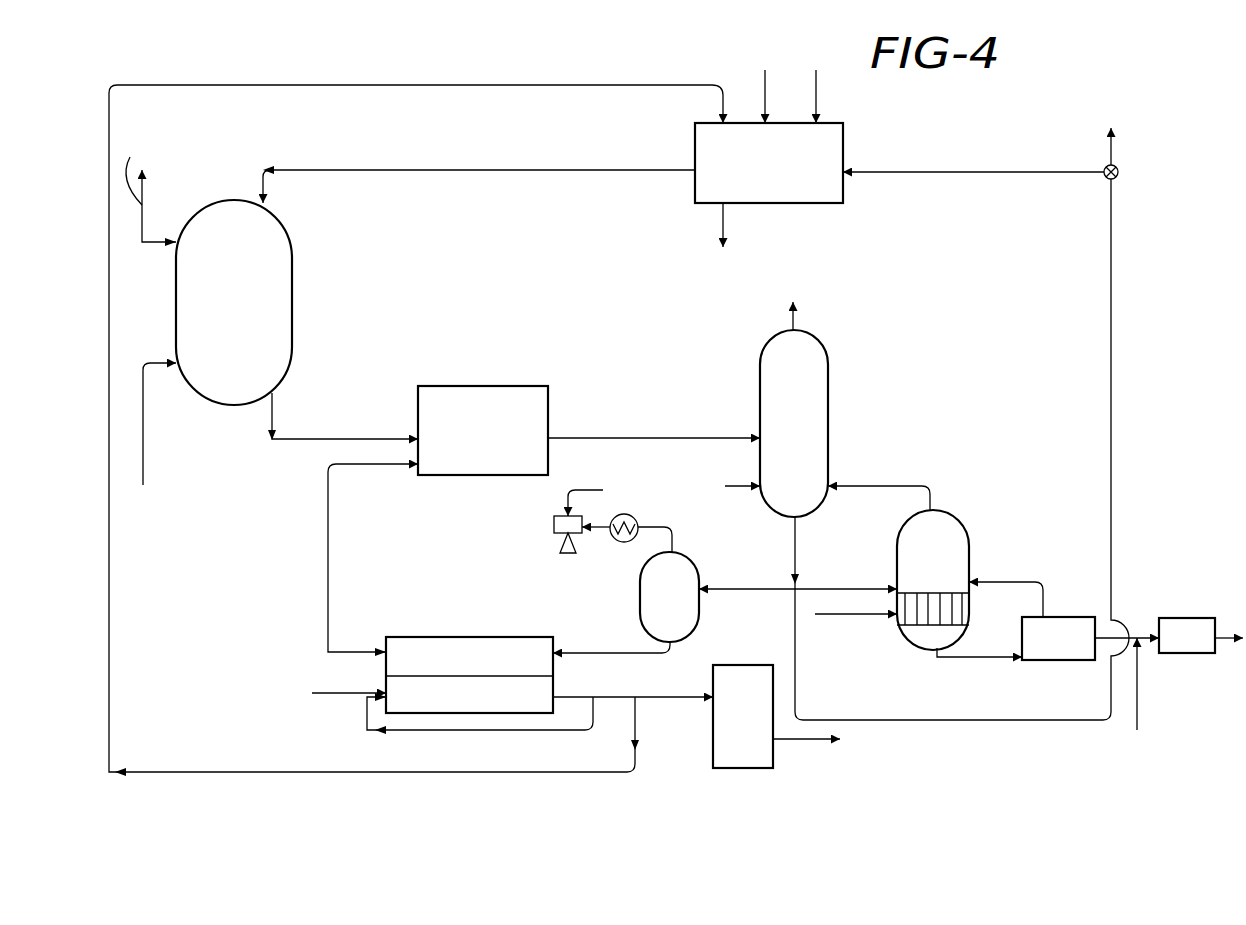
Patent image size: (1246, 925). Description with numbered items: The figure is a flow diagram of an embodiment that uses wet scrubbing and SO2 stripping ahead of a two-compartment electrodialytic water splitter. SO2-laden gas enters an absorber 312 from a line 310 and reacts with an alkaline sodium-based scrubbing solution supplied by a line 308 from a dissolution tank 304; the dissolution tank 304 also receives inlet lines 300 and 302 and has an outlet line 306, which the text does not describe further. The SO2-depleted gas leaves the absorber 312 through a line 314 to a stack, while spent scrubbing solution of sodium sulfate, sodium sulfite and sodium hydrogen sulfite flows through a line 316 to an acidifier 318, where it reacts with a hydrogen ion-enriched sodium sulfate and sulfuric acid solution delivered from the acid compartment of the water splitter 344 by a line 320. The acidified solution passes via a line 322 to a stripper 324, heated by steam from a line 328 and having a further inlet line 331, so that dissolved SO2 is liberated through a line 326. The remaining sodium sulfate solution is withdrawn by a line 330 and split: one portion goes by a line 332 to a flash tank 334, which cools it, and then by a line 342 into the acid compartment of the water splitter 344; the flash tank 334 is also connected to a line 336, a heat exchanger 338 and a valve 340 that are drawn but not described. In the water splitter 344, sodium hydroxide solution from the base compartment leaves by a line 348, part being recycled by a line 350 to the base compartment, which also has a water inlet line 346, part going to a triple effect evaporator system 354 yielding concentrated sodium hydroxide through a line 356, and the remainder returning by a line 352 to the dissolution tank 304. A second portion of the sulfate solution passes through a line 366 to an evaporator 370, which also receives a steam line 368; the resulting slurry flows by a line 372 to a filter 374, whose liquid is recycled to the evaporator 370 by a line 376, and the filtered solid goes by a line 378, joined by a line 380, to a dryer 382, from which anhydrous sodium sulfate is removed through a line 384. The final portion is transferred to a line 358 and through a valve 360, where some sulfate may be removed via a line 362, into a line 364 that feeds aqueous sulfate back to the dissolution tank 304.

The water inlet line 300 is at (816, 100).
The trona inlet line 302 is at (765, 95).
The dissolution tank 304 is at (880, 142).
The waste outlet line 306 is at (723, 225).
The line 308 is at (520, 170).
The line 310 is at (143, 470).
The absorber 312 is at (292, 298).
The line 314 is at (150, 206).
The line 316 is at (350, 439).
The acidifier 318 is at (487, 386).
The line 320 is at (328, 558).
The line 322 is at (640, 438).
The stripper 324 is at (828, 425).
The line 326 is at (795, 322).
The line 328 is at (882, 473).
The line 330 is at (795, 535).
The stripper inlet line 331 is at (745, 470).
The line 332 is at (768, 600).
The flash tank 334 is at (640, 600).
The line to feed tank from heat exchanger 336 is at (672, 540).
The heat exchanger 338 is at (665, 495).
The control valve 340 is at (554, 528).
The line 342 is at (625, 653).
The two-compartment electrodialytic water splitter 344 is at (492, 610).
The water inlet line 346 is at (352, 694).
The line 348 is at (640, 697).
The line 350 is at (565, 730).
The line 352 is at (581, 85).
The triple effect evaporator system 354 is at (755, 648).
The line 356 is at (793, 742).
The line 358 is at (1113, 365).
The valve 360 is at (1118, 172).
The line 362 is at (1113, 155).
The line 364 is at (1010, 170).
The line 366 is at (858, 562).
The steam inlet line 368 is at (880, 615).
The evaporator 370 is at (969, 540).
The line 372 is at (1000, 657).
The filter 374 is at (1060, 617).
The line 376 is at (1005, 582).
The line 378 is at (1135, 638).
The inlet line to dryer 380 is at (1137, 705).
The dryer 382 is at (1168, 618).
The line 384 is at (1230, 598).